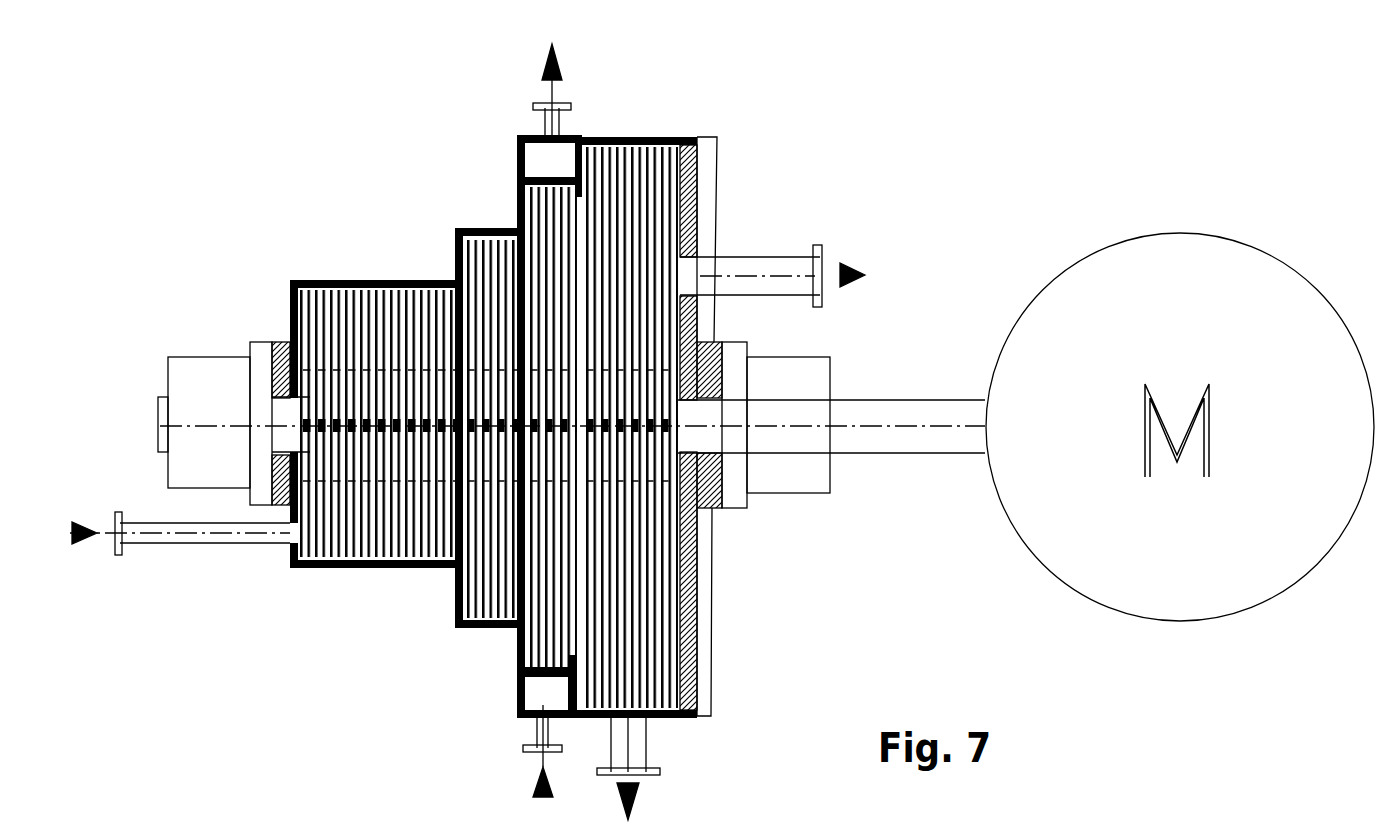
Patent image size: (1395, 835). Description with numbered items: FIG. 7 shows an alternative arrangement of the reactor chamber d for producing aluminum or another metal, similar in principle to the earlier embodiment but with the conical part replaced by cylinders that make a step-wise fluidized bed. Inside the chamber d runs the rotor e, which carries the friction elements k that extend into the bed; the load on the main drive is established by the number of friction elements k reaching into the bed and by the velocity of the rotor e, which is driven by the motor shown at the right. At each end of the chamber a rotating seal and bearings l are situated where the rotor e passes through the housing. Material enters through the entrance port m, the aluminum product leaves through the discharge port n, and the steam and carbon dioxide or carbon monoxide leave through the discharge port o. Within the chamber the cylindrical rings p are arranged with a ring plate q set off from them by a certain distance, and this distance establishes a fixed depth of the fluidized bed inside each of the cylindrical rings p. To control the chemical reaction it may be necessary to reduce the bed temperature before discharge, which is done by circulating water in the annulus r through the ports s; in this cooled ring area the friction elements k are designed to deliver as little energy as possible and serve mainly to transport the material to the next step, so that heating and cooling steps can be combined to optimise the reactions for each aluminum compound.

The reactor chamber d is at (390, 567).
The ring plate q is at (598, 137).
The friction elements k is at (663, 137).
The cylindrical rings p is at (540, 175).
The annulus r is at (562, 157).
The ports s is at (551, 751).
The discharge port for the aluminum n is at (655, 775).
The discharge port for the steam and CO2 or CO o is at (820, 250).
The entrance port for the material m is at (118, 545).
The rotating seal and bearings l is at (183, 357).
The rotor e is at (872, 400).